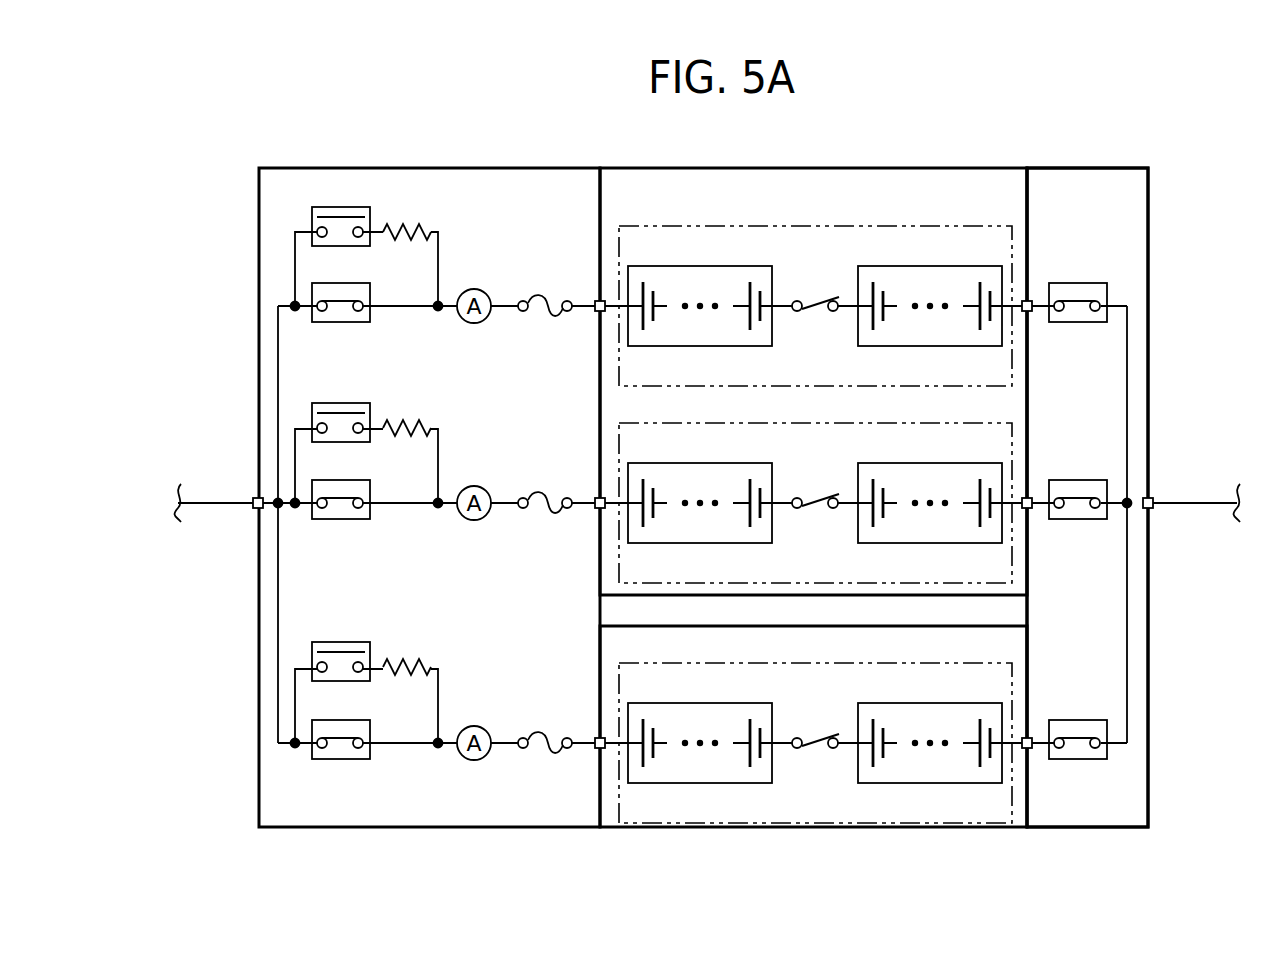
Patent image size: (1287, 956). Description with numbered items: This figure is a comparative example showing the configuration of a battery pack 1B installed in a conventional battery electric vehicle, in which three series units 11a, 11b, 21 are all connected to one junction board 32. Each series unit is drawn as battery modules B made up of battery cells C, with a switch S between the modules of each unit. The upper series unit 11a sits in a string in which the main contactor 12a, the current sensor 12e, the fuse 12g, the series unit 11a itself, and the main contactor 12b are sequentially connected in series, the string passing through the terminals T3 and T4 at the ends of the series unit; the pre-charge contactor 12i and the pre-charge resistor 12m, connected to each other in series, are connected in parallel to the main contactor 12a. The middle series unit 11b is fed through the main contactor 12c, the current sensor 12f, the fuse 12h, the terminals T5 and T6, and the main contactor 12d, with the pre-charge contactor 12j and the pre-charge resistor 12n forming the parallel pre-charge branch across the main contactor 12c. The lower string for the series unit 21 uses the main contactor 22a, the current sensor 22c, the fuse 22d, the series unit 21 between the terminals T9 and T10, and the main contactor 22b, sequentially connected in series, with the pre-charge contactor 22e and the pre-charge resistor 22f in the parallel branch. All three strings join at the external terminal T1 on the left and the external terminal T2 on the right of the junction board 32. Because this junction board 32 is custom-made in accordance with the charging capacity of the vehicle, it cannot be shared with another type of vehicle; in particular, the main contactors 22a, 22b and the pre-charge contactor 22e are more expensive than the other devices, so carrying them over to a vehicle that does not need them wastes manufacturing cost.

The power storage system 1B is at (912, 129).
The junction board 32 is at (1148, 204).
The series unit 11a is at (836, 228).
The series unit 11b is at (838, 423).
The series unit 21 is at (838, 663).
The battery module B is at (708, 267).
The switch S is at (819, 293).
The battery cell C is at (655, 313).
The main contactor 12a is at (334, 284).
The main contactor 12b is at (1064, 282).
The main contactor 12c is at (334, 480).
The main contactor 12d is at (1064, 479).
The current sensor 12e is at (480, 288).
The current sensor 12f is at (480, 485).
The fuse 12g is at (549, 292).
The fuse 12h is at (549, 489).
The pre-charge contactor 12i is at (334, 207).
The pre-charge contactor 12j is at (334, 404).
The pre-charge resistor 12m is at (430, 223).
The pre-charge resistor 12n is at (430, 420).
The main contactor 22a is at (334, 720).
The main contactor 22b is at (1064, 719).
The current sensor 22c is at (480, 725).
The fuse 22d is at (549, 729).
The pre-charge contactor 22e is at (334, 643).
The pre-charge resistor 22f is at (430, 658).
The terminal T1 is at (253, 509).
The terminal T2 is at (1153, 509).
The terminal T3 is at (594, 312).
The terminal T4 is at (1033, 312).
The terminal T5 is at (594, 509).
The terminal T6 is at (1033, 509).
The terminal T9 is at (594, 749).
The terminal T10 is at (1033, 749).